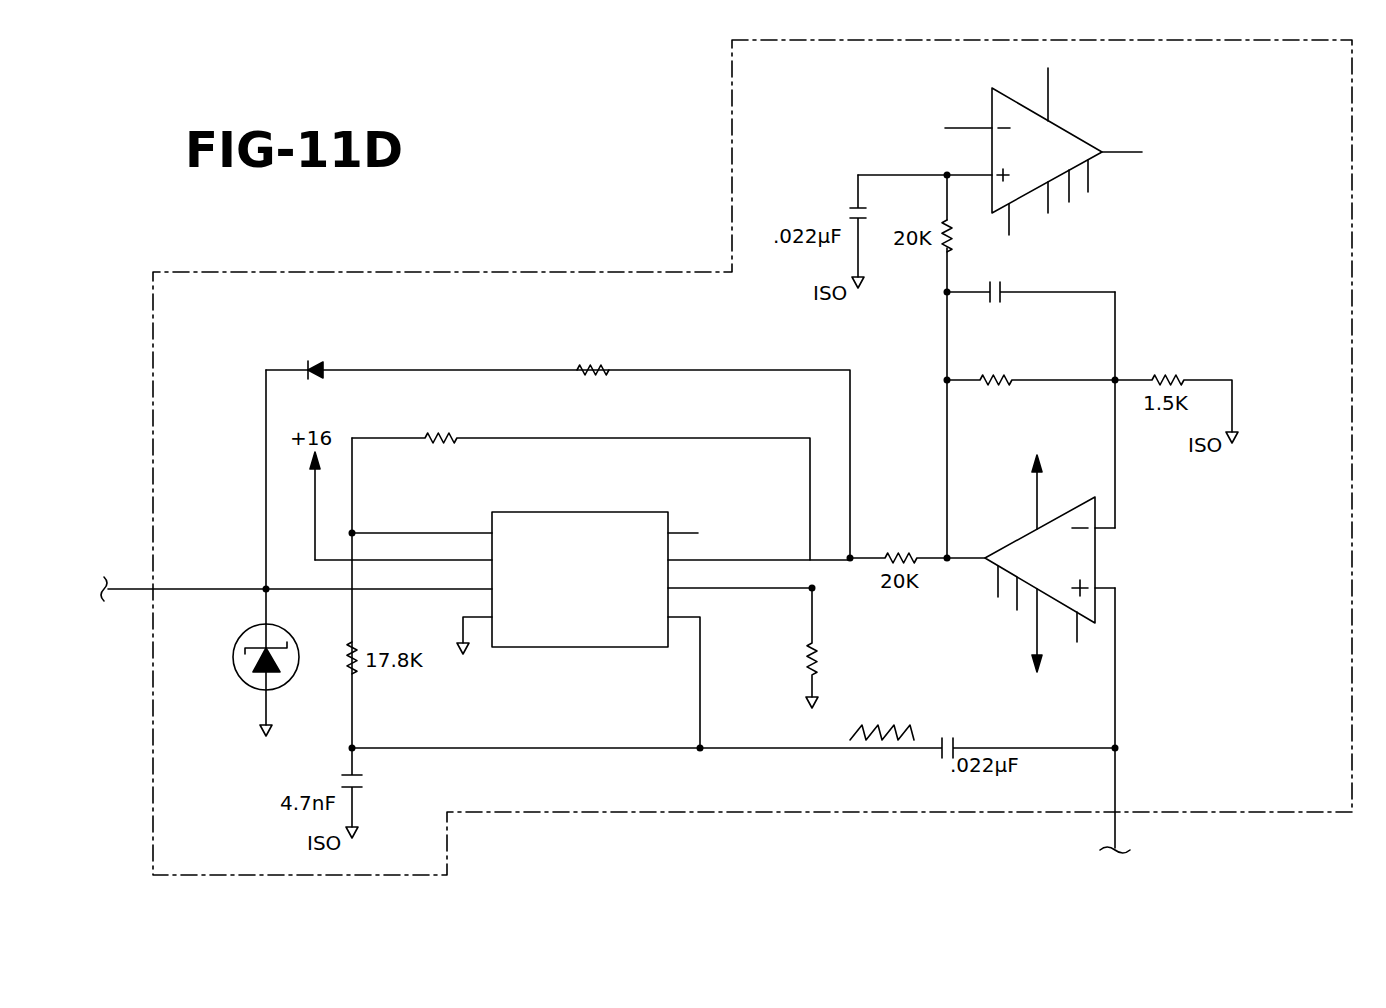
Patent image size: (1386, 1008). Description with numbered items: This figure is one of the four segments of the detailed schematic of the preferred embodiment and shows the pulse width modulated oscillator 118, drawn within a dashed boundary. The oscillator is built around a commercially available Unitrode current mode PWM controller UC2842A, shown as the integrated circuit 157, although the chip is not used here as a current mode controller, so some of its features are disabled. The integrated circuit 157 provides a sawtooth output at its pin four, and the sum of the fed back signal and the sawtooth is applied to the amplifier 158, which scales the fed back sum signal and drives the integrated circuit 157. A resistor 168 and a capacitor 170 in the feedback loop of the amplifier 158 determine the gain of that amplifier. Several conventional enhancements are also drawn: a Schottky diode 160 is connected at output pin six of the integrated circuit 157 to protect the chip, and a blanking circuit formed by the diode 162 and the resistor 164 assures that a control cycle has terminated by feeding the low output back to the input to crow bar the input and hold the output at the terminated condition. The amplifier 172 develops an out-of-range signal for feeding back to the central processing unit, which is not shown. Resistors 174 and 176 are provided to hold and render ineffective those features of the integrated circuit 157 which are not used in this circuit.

The pulse width modulated oscillator 118 is at (702, 270).
The integrated circuit 157 is at (575, 512).
The amplifier 158 is at (1003, 548).
The Schottky diode 160 is at (248, 685).
The diode 162 is at (320, 362).
The resistor 164 is at (590, 369).
The resistor 168 is at (992, 376).
The capacitor 170 is at (1002, 290).
The amplifier 172 is at (1072, 136).
The resistor 174 is at (435, 434).
The resistor 176 is at (810, 648).